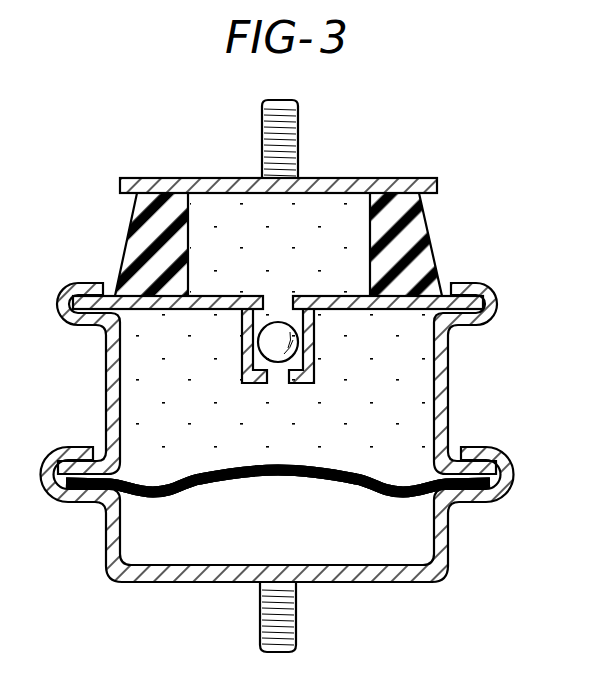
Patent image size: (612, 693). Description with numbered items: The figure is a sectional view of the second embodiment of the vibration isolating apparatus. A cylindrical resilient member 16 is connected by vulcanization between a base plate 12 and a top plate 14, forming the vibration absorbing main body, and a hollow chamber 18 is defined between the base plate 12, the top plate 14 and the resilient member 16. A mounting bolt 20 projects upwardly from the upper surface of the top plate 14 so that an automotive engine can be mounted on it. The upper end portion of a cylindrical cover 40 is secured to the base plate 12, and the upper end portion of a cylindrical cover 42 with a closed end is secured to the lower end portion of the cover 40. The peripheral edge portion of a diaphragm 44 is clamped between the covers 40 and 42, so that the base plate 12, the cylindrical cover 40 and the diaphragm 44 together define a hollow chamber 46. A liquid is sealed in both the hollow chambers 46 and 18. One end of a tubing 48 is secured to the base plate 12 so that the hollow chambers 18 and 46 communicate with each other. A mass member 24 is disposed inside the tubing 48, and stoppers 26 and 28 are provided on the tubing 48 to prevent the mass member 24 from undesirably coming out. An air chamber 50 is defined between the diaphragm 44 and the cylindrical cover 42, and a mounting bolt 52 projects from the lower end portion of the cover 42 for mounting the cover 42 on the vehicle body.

The base plate 12 is at (176, 310).
The top plate 14 is at (406, 178).
The cylindrical resilient member 16 is at (425, 222).
The hollow chamber 18 is at (291, 261).
The mounting bolt 20 is at (300, 146).
The mass member 24 is at (253, 364).
The stopper 26 is at (290, 296).
The stopper 28 is at (288, 372).
The cylindrical cover 40 is at (448, 382).
The cylindrical cover with a closed end 42 is at (393, 582).
The diaphragm 44 is at (312, 477).
The hollow chamber 46 is at (267, 438).
The tubing 48 is at (313, 357).
The air chamber 50 is at (250, 528).
The mounting bolt 52 is at (297, 620).